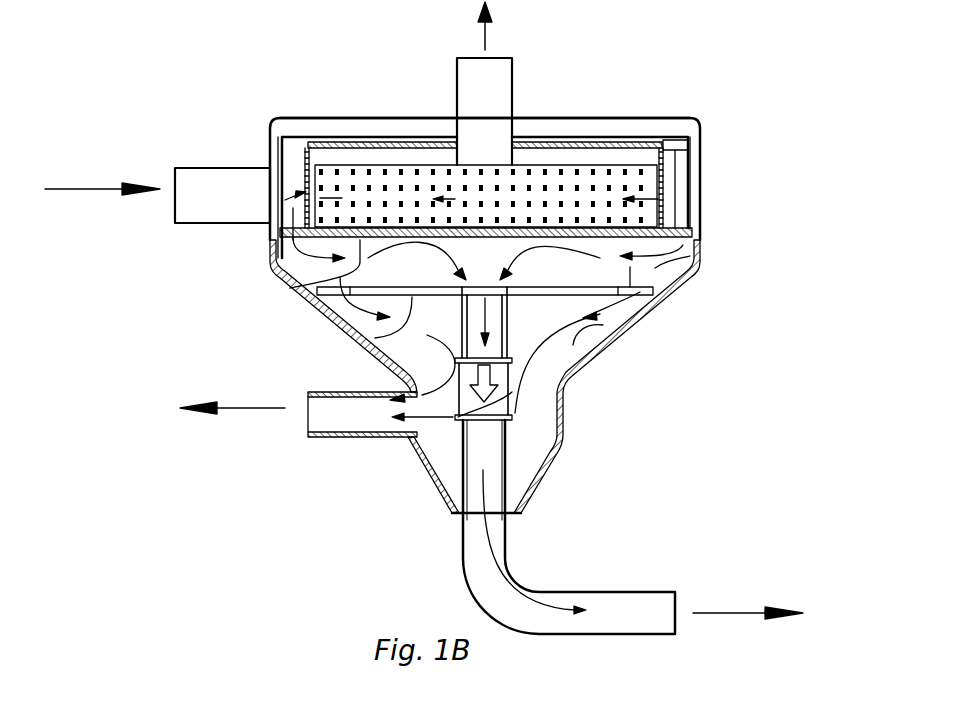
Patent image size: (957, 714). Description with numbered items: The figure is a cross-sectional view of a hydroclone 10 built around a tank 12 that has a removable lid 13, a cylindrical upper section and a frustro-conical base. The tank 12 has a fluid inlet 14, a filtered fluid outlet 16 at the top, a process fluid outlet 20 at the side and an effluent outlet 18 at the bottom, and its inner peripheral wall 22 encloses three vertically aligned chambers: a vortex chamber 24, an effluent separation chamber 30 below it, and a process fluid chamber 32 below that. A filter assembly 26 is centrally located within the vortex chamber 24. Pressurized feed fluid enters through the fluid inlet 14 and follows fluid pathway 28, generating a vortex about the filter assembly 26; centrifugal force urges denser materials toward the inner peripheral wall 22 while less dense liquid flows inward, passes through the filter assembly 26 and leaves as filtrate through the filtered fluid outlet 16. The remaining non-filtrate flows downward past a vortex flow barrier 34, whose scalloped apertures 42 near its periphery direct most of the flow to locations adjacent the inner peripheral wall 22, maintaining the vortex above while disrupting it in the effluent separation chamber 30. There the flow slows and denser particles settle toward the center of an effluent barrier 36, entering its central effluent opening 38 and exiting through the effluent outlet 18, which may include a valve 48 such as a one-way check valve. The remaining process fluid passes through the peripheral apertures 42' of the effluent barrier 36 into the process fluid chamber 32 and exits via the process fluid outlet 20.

The hydroclone 10 is at (736, 86).
The tank 12 is at (588, 367).
The removable lid 13 is at (328, 120).
The fluid inlet 14 is at (210, 217).
The filtered fluid outlet 16 is at (513, 80).
The effluent outlet 18 is at (510, 552).
The process fluid outlet 20 is at (345, 440).
The inner peripheral wall 22 is at (360, 336).
The vortex chamber 24 is at (672, 200).
The filter assembly 26 is at (593, 165).
The fluid pathway 28 is at (668, 203).
The effluent separation chamber 30 is at (690, 262).
The process fluid chamber 32 is at (590, 333).
The vortex flow barrier 34 is at (318, 290).
The effluent barrier 36 is at (405, 338).
The effluent opening 38 is at (483, 275).
The apertures 42 is at (525, 237).
The apertures 42' is at (664, 307).
The valve 48 is at (512, 415).